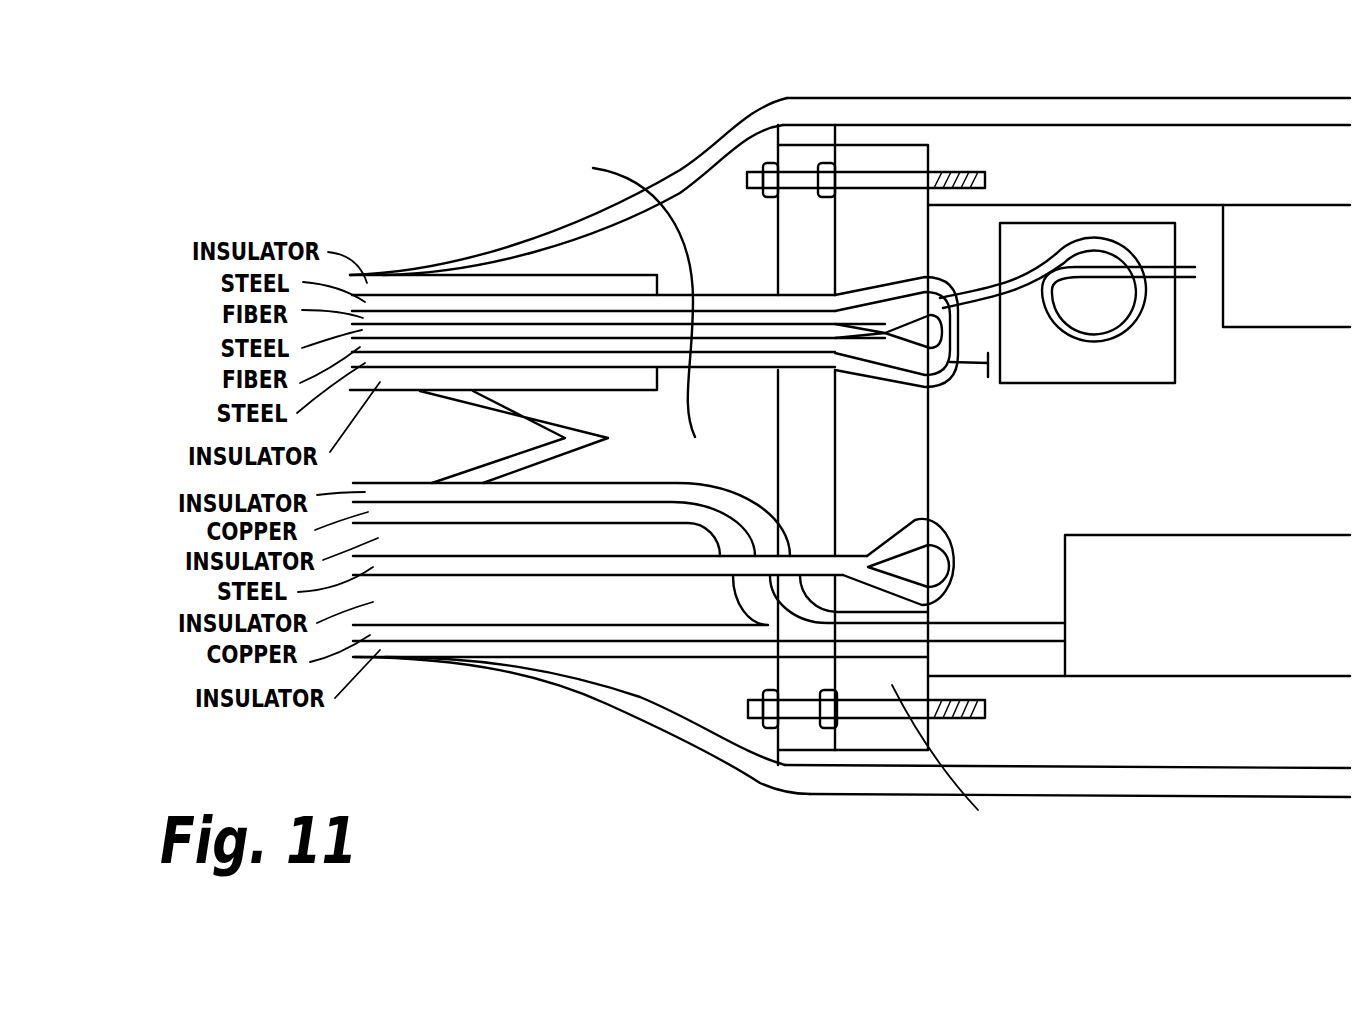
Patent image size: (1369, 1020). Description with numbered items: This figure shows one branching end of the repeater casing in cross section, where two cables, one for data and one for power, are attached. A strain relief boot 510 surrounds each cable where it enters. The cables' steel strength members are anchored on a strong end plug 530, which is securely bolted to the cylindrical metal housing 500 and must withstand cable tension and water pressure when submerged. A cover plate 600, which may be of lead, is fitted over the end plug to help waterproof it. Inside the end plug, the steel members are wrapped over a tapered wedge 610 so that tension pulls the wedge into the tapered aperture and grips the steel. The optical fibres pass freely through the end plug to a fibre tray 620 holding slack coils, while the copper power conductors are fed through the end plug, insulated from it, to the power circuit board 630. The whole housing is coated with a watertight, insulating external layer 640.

The cylindrical metal housing 500 is at (1290, 155).
The strain relief boot 510 is at (627, 242).
The end plug 530 is at (888, 157).
The cover plate 600 is at (795, 687).
The tapered wedge 610 is at (938, 340).
The fibre tray 620 is at (1015, 233).
The power circuit board 630 is at (1295, 665).
The external layer 640 is at (830, 108).